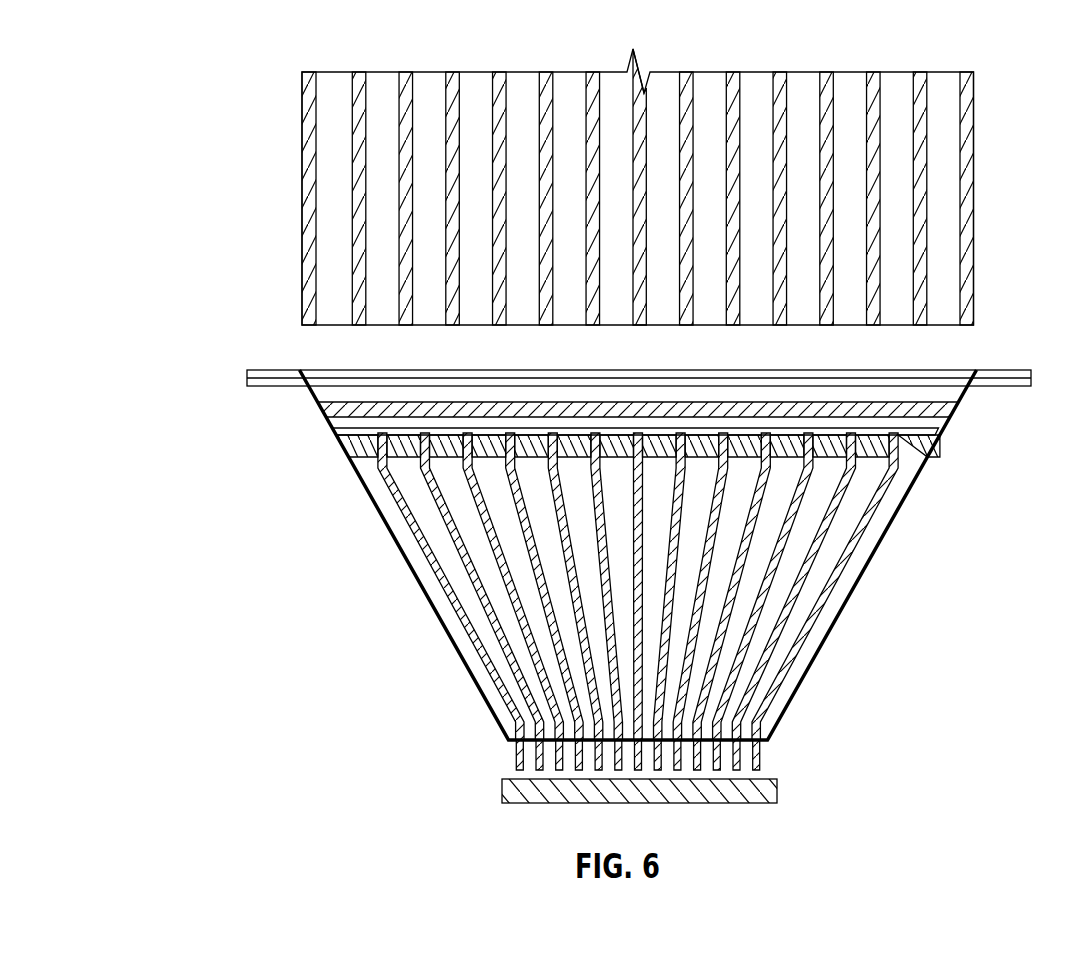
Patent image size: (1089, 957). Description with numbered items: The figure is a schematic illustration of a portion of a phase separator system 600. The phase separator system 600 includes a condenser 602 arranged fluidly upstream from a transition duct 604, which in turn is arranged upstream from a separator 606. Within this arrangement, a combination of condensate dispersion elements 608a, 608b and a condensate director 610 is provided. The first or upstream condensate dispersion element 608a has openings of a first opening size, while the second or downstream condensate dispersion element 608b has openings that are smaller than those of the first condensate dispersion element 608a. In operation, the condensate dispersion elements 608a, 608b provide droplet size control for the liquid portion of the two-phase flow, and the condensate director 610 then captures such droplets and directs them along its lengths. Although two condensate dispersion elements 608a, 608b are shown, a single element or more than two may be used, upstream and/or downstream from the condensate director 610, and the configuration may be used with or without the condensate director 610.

The phase separator system 600 is at (257, 72).
The condenser 602 is at (968, 150).
The transition duct 604 is at (416, 583).
The separator 606 is at (500, 790).
The first condensate dispersion element 608a is at (1008, 368).
The second condensate dispersion element 608b is at (318, 407).
The condensate director 610 is at (890, 487).